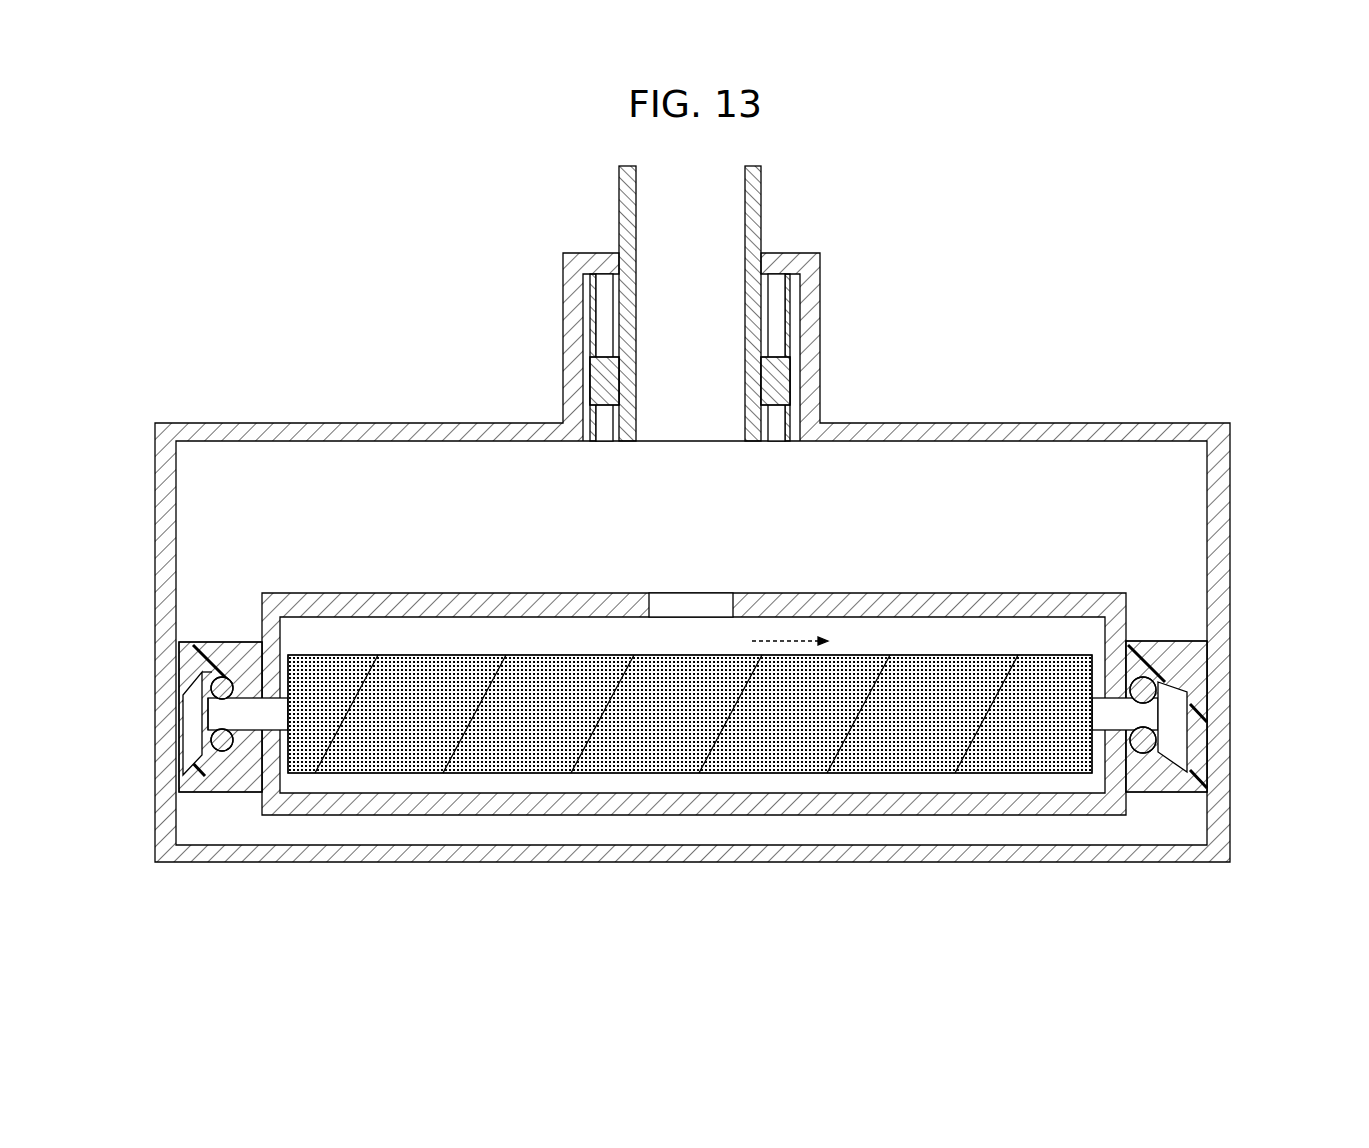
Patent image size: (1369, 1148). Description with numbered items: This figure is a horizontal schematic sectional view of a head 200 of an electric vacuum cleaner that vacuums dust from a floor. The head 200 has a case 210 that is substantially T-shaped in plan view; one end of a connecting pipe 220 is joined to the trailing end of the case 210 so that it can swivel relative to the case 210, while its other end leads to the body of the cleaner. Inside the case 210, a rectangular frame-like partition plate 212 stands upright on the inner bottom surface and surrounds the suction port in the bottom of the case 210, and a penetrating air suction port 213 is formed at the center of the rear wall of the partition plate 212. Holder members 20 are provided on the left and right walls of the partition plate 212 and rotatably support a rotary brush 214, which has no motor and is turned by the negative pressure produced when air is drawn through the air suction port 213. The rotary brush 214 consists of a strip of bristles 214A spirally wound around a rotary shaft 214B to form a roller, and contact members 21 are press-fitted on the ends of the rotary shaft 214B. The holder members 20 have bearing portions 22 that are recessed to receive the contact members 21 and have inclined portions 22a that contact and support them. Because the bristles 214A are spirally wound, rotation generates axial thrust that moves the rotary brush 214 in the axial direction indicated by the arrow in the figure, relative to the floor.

The head 200 is at (240, 268).
The case 210 is at (382, 422).
The partition plate 212 is at (512, 592).
The air suction port 213 is at (688, 592).
The rotary brush 214 is at (647, 729).
The bristles 214A is at (513, 748).
The rotary shaft 214B is at (247, 717).
The connecting pipe 220 is at (762, 232).
The holder member 20 is at (193, 627).
The contact member 21 is at (213, 688).
The bearing portion 22 is at (207, 752).
The inclined portion 22a is at (258, 682).